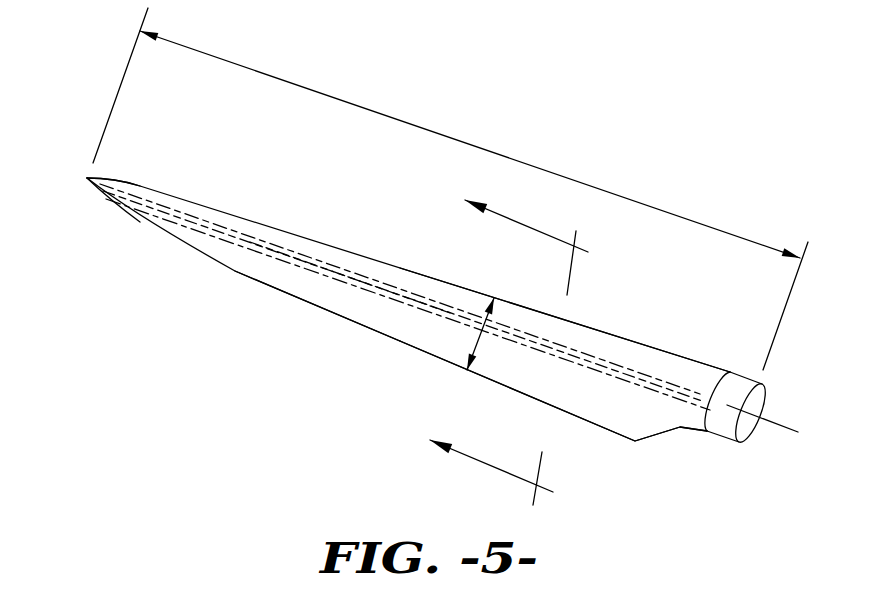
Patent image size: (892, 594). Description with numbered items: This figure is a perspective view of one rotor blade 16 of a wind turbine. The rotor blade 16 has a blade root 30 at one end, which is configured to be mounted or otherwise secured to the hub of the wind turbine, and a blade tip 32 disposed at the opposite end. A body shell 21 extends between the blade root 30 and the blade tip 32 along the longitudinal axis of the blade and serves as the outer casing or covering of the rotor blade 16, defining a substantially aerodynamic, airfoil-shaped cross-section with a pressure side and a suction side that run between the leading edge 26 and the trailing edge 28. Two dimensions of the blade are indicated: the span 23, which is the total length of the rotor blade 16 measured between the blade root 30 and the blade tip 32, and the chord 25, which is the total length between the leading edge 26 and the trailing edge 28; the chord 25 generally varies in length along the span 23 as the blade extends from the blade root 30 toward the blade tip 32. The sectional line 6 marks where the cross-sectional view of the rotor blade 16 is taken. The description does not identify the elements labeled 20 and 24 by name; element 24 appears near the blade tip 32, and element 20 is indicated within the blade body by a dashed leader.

The rotor blade 16 is at (426, 258).
The internal spar / shear web 20 is at (364, 291).
The body shell 21 is at (300, 278).
The span 23 is at (380, 114).
The blade tip end 24 is at (88, 179).
The chord 25 is at (478, 334).
The leading edge 26 is at (618, 336).
The trailing edge 28 is at (597, 425).
The blade root 30 is at (724, 426).
The blade tip 32 is at (88, 178).
The sectional line 6- 6 is at (502, 334).